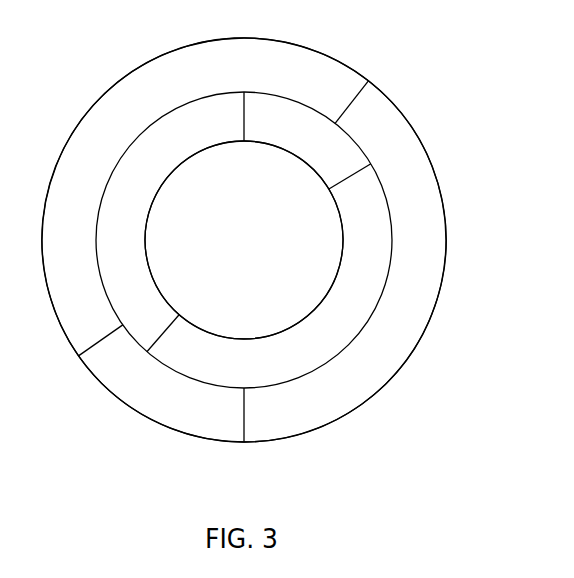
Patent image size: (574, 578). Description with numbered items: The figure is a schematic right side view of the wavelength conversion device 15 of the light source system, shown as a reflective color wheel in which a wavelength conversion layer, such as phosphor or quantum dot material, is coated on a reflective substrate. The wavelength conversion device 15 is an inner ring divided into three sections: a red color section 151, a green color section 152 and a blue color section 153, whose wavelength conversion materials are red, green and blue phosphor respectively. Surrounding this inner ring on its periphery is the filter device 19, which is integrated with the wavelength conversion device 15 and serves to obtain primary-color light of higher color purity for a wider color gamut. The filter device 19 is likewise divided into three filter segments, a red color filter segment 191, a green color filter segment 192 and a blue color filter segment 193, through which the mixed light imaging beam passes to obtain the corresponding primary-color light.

The wavelength conversion device 15 is at (133, 278).
The red color section 151 is at (259, 258).
The green color section 152 is at (178, 203).
The blue color section 153 is at (290, 154).
The filter device 19 is at (121, 382).
The red color filter segment 191 is at (205, 197).
The green color filter segment 192 is at (345, 261).
The blue color filter segment 193 is at (162, 399).